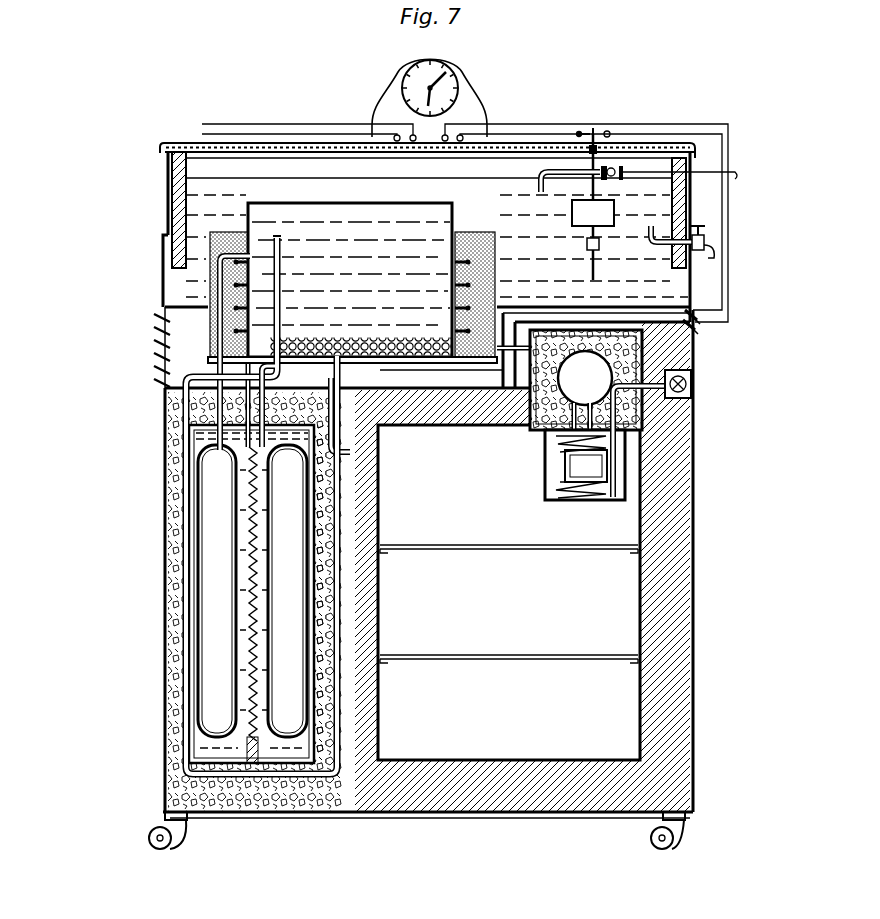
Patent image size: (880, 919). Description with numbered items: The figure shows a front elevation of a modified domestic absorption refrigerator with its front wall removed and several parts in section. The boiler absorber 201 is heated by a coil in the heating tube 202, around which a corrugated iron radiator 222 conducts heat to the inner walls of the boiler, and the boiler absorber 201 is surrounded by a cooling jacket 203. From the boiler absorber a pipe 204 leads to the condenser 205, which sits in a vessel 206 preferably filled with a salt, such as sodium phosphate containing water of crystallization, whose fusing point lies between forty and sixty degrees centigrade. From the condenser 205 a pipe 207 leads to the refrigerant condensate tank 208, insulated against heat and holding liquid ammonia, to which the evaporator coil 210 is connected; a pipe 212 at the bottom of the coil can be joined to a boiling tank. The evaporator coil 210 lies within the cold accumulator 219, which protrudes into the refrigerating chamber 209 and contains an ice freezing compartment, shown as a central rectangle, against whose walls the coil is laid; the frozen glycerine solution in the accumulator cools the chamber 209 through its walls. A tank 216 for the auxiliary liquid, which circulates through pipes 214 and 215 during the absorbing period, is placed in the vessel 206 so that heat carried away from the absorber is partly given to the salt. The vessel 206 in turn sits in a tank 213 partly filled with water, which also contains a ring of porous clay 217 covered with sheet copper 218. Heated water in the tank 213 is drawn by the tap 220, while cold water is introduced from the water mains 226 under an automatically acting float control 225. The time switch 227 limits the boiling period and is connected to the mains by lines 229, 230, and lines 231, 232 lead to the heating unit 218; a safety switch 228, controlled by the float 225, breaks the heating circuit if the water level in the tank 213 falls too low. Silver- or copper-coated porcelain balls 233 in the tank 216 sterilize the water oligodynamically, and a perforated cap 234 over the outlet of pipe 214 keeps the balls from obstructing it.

The boiler absorber 201 is at (212, 518).
The heating tube 202 is at (236, 492).
The cooling jacket 203 is at (185, 690).
The pipe 204 is at (214, 336).
The condenser 205 is at (228, 348).
The vessel 206 is at (212, 248).
The pipe 207 is at (490, 362).
The refrigerant condensate tank 208 is at (577, 388).
The refrigerating chamber 209 is at (620, 606).
The evaporator coil 210 is at (582, 490).
The pipe 212 is at (616, 495).
The tank 213 is at (680, 288).
The pipe 214 is at (330, 727).
The pipe 215 is at (285, 772).
The tank for auxiliary liquid 216 is at (250, 206).
The ring of porous clay 217 is at (685, 204).
The sheet copper 218 is at (183, 199).
The cold accumulator 219 is at (545, 480).
The tap 220 is at (716, 246).
The corrugated iron radiator 222 is at (242, 543).
The float control 225 is at (612, 213).
The water mains 226 is at (738, 176).
The time switch 227 is at (462, 82).
The safety switch 228 is at (593, 125).
The line 229 is at (229, 133).
The line 230 is at (297, 117).
The line 231 is at (730, 136).
The line 232 is at (724, 160).
The balls 233 is at (396, 358).
The perforated cap 234 is at (338, 362).